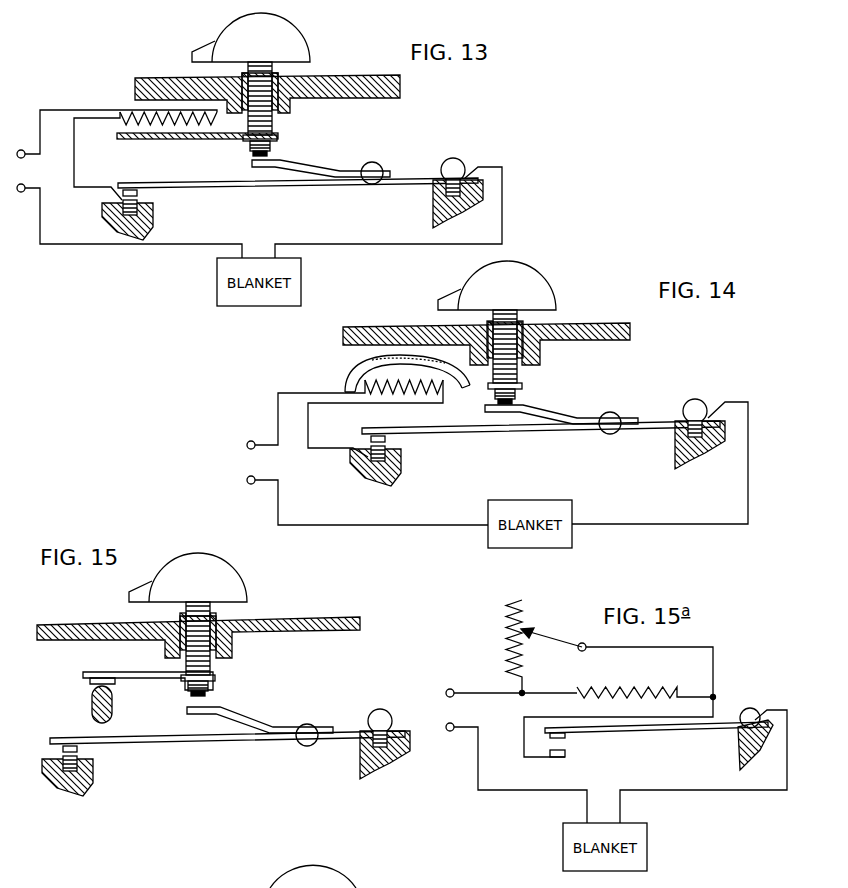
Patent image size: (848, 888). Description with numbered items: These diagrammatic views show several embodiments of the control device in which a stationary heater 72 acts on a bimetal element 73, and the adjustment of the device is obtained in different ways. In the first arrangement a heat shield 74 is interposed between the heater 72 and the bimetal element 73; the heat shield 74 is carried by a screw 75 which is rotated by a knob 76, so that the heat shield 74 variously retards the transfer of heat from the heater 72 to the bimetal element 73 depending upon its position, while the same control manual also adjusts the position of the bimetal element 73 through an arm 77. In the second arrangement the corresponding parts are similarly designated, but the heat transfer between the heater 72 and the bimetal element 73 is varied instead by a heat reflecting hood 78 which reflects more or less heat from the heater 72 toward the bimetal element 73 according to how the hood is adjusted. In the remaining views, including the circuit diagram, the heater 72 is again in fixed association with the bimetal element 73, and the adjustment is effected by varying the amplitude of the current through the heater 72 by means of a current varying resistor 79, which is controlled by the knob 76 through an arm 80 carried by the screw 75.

In FIG. 13, the heater 72 is at (145, 112).
In FIG. 14, the heater 72 is at (416, 390).
In FIG. 15A, the heater 72 is at (650, 693).
In FIG. 13, the bimetal element 73 is at (262, 185).
In FIG. 14, the bimetal element 73 is at (500, 431).
In FIG. 15, the bimetal element 73 is at (214, 742).
In FIG. 15A, the bimetal element 73 is at (695, 727).
In FIG. 13, the heat shield 74 is at (160, 139).
In FIG. 13, the screw 75 is at (278, 82).
In FIG. 14, the screw 75 is at (534, 345).
In FIG. 15, the screw 75 is at (222, 620).
In FIG. 13, the knob 76 is at (245, 38).
In FIG. 14, the knob 76 is at (518, 280).
In FIG. 15, the knob 76 is at (197, 578).
In FIG. 13, the arm 77 is at (300, 165).
In FIG. 14, the arm 77 is at (536, 407).
In FIG. 15, the arm 77 is at (244, 716).
In FIG. 14, the heat reflecting hood 78 is at (358, 370).
In FIG. 15, the current varying resistor 79 is at (113, 702).
In FIG. 15A, the current varying resistor 79 is at (525, 662).
In FIG. 15, the arm 80 is at (138, 672).